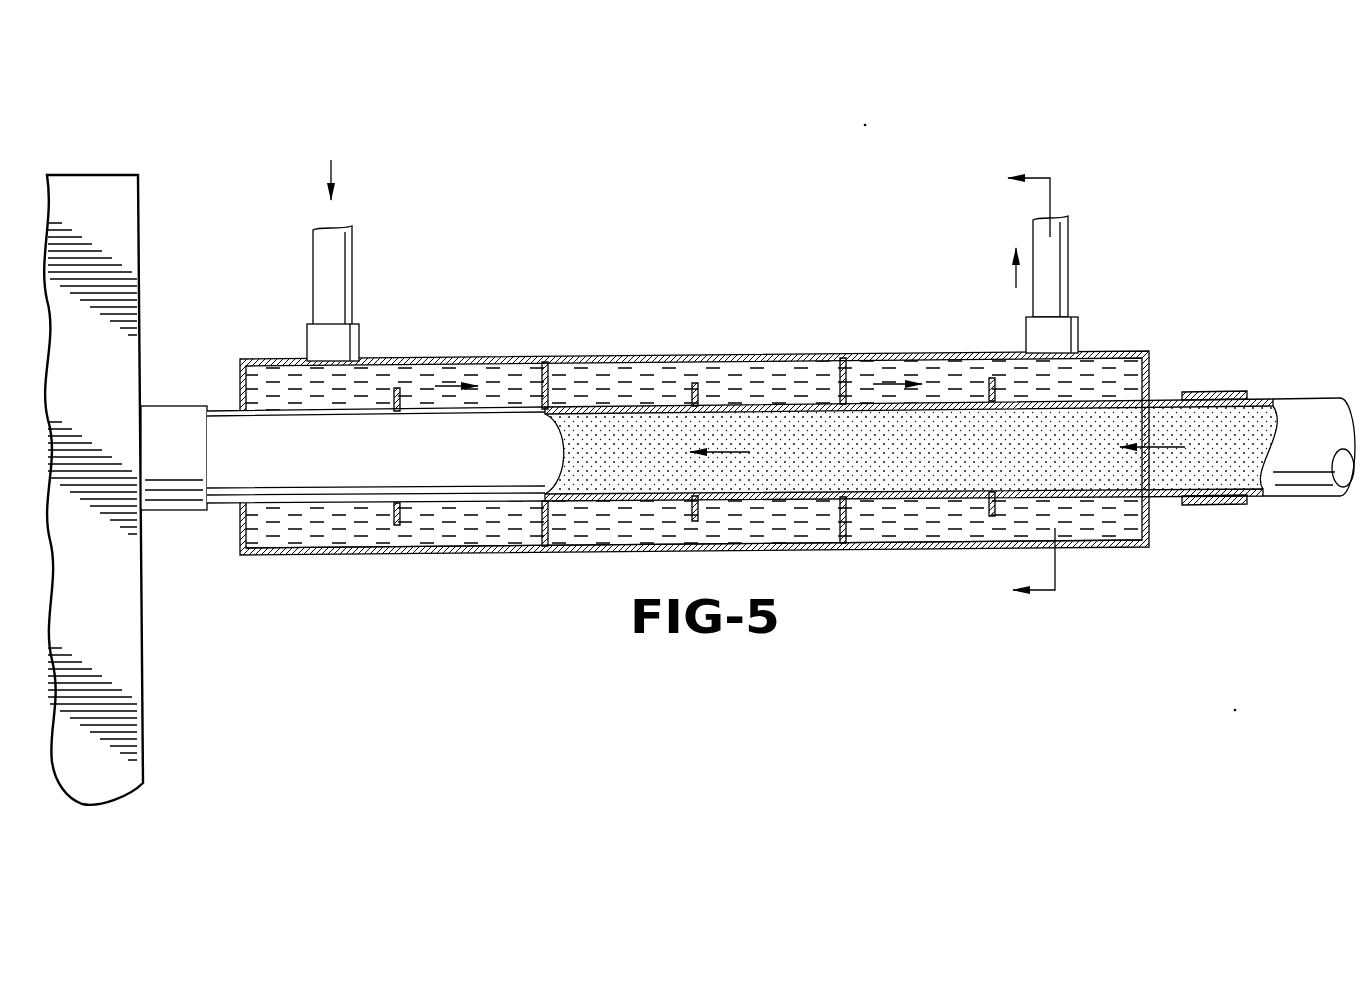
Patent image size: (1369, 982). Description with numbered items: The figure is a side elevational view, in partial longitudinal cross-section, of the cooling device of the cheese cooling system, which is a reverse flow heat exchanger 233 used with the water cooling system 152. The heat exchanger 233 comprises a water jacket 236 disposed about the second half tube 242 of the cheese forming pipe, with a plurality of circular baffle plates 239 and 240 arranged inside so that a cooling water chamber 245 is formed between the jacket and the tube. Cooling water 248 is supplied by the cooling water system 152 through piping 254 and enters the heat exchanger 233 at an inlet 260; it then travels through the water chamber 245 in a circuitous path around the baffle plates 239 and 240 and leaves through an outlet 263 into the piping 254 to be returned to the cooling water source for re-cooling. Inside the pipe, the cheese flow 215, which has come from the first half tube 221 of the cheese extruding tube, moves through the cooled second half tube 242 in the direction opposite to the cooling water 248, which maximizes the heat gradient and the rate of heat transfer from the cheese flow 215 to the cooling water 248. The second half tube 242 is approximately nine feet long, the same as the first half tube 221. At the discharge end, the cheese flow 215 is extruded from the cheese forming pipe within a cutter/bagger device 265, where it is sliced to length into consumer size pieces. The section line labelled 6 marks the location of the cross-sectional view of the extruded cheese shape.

The section line 6- 6 is at (1014, 387).
The water cooling system 152 is at (781, 376).
The cheese flow 215 is at (1222, 466).
The first half tube 221 is at (1305, 497).
The reverse flow heat exchanger 233 is at (576, 356).
The water jacket 236 is at (437, 555).
The circular baffle plate 239 is at (840, 370).
The circular baffle plate 240 is at (986, 380).
The second half tube 242 is at (1165, 392).
The cooling water chamber 245 is at (642, 380).
The cooling water 248 is at (717, 378).
The piping 254 is at (352, 283).
The inlet 260 is at (360, 332).
The outlet 263 is at (1078, 330).
The cutter/bagger device 265 is at (97, 172).